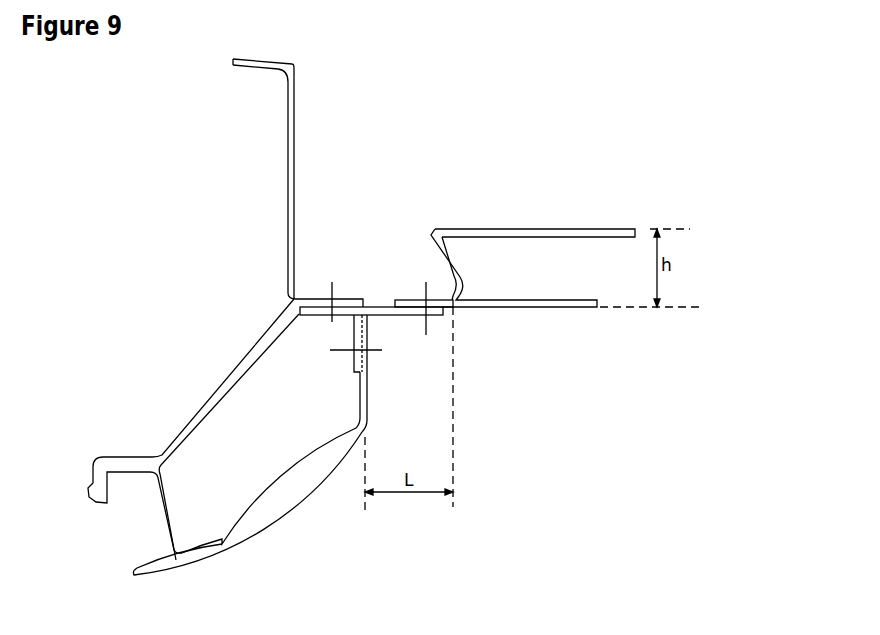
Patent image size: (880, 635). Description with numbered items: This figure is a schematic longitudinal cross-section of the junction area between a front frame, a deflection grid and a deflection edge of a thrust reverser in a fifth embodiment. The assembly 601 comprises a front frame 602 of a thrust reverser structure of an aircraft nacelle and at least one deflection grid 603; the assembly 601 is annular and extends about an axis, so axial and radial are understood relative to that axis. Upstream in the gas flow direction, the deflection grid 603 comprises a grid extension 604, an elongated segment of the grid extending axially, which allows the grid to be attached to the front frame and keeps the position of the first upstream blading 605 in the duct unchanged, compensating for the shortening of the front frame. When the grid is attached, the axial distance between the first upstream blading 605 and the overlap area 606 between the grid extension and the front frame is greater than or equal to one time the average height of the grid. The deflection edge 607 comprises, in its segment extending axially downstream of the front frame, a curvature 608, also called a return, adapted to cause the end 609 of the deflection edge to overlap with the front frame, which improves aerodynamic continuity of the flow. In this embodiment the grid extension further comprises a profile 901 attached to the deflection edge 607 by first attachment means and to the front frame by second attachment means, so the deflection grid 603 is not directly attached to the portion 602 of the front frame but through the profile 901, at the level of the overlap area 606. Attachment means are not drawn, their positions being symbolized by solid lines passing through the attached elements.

The assembly 601 is at (422, 99).
The front frame 602 is at (217, 388).
The deflection grid 603 is at (543, 229).
The grid extension 604 is at (405, 298).
The first upstream blading 605 is at (465, 273).
The overlap area 606 is at (332, 219).
The deflection edge 607 is at (301, 505).
The curvature 608 is at (366, 425).
The end of the deflection edge 609 is at (368, 346).
The profile 901 is at (380, 306).